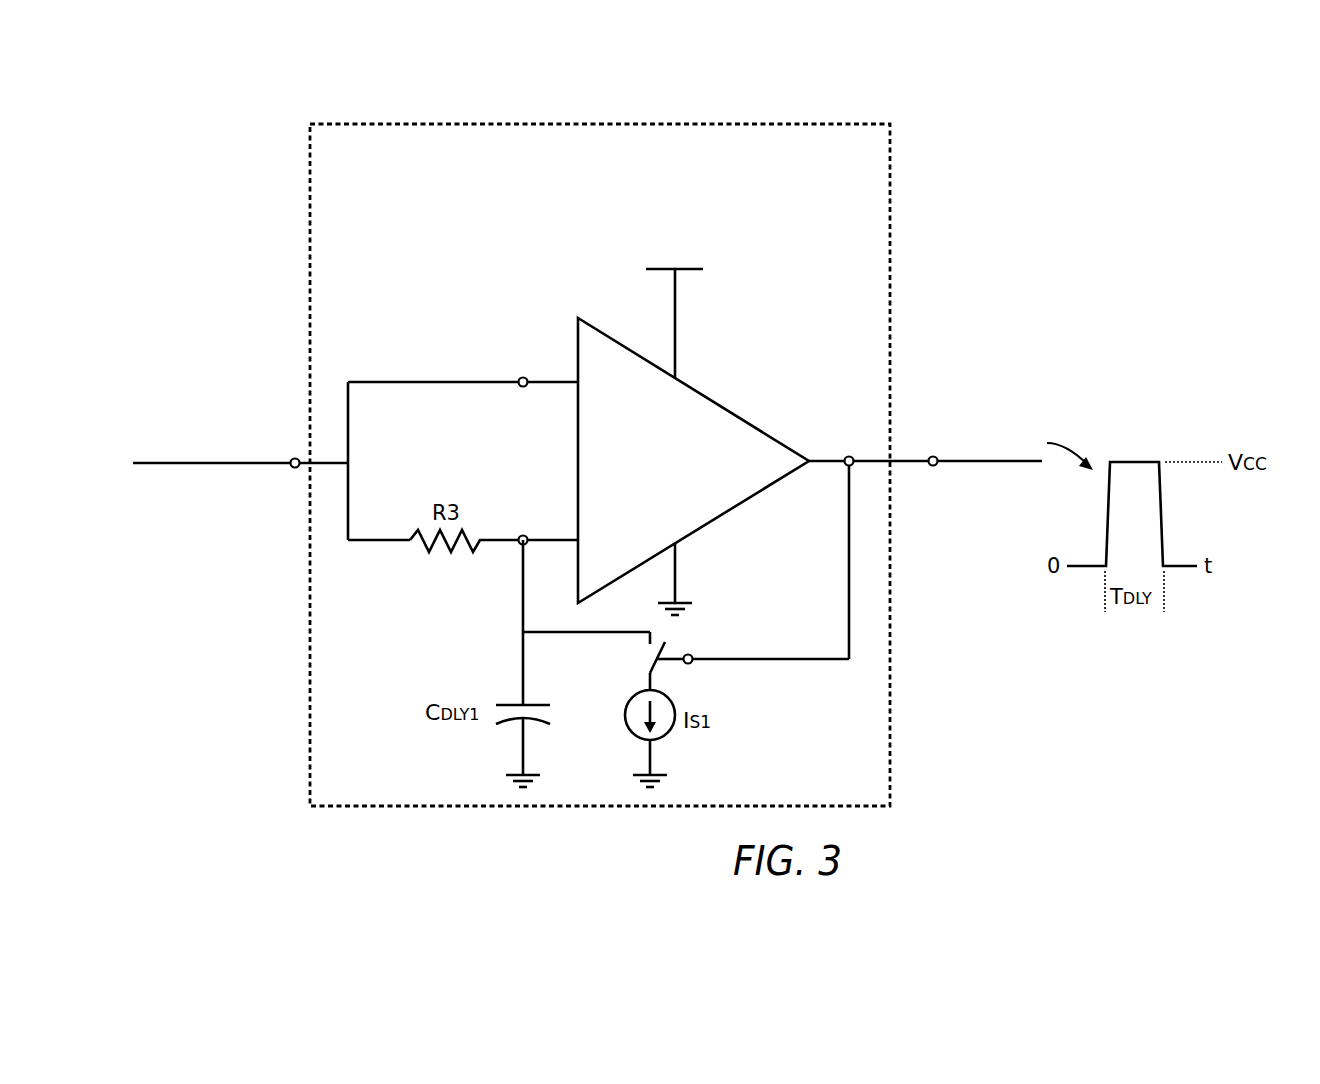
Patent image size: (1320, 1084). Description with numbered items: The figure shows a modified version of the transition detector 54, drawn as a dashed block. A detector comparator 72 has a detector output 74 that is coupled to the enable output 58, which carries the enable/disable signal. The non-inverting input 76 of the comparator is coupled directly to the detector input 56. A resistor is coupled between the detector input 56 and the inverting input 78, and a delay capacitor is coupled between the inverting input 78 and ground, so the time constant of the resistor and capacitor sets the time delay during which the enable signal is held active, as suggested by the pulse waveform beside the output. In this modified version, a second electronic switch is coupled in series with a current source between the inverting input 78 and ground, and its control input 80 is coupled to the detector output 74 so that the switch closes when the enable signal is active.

The transition detector 54 is at (883, 152).
The detector input 56 is at (291, 459).
The detector comparator 72 is at (679, 519).
The detector output 74 is at (845, 457).
The non-inverting input 76 is at (519, 378).
The inverting input 78 is at (519, 536).
The control input 80 is at (692, 655).
The enable output 58 is at (930, 467).